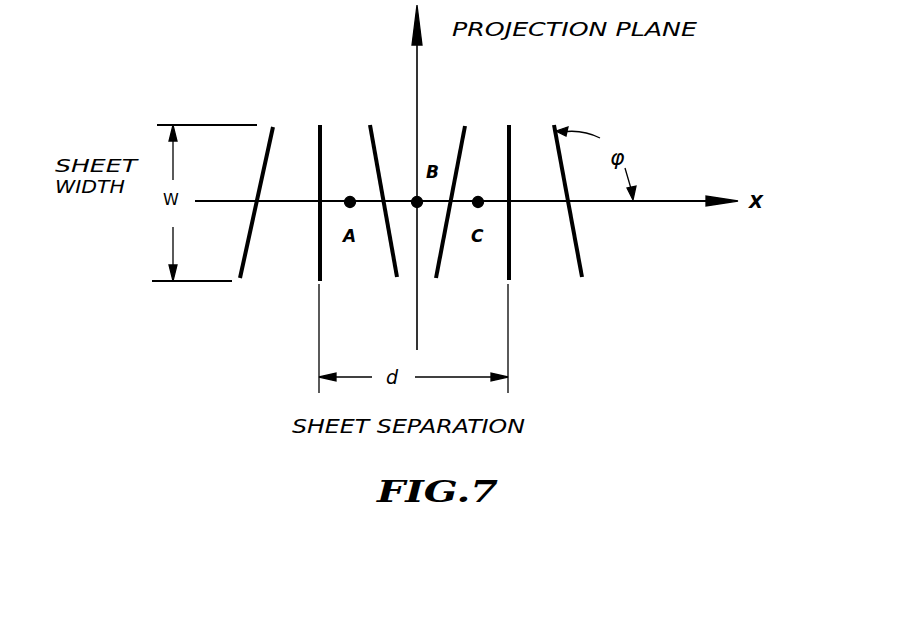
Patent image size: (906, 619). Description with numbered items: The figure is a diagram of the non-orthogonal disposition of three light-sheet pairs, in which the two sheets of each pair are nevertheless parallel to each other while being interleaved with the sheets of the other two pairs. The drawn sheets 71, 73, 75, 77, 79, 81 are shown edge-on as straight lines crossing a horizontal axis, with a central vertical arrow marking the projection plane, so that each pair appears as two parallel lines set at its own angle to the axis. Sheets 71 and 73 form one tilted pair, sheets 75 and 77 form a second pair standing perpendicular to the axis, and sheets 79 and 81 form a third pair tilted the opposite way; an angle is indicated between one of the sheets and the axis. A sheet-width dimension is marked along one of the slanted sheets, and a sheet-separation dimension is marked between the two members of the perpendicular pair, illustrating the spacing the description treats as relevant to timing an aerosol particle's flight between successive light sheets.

The first light sheet 71 is at (260, 172).
The second light sheet 73 is at (459, 172).
The third light sheet 75 is at (334, 174).
The fourth light sheet 77 is at (539, 173).
The fifth light sheet 79 is at (377, 220).
The sixth light sheet 81 is at (568, 220).